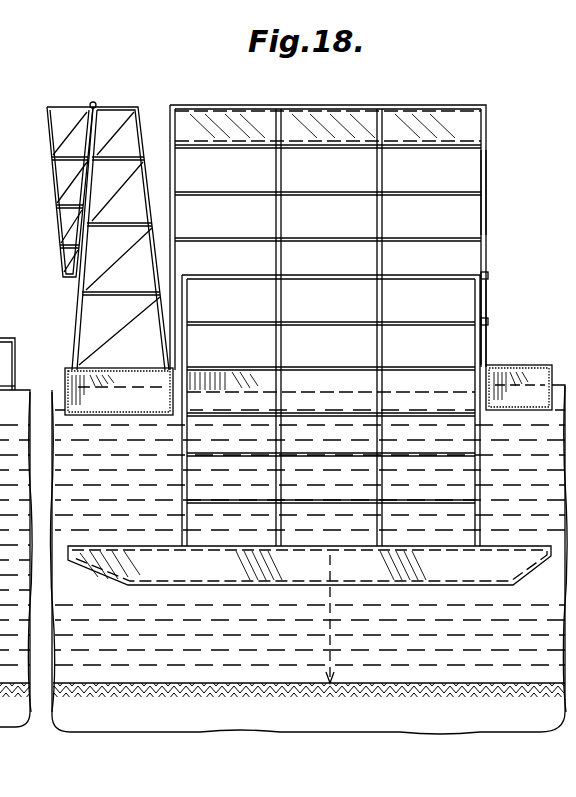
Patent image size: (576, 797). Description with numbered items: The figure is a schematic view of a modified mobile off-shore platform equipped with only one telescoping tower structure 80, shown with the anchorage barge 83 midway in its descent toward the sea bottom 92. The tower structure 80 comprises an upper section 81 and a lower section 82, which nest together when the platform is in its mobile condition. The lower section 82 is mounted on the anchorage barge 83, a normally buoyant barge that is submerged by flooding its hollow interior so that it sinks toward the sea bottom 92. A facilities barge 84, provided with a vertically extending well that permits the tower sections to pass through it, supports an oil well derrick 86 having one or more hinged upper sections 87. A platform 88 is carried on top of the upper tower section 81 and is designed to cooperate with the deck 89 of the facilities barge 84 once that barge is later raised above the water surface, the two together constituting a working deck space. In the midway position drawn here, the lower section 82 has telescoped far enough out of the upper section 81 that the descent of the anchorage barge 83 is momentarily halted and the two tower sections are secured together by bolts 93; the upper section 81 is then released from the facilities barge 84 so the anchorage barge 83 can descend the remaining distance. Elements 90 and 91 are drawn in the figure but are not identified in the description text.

The telescoping tower structure 80 is at (496, 146).
The upper section 81 is at (488, 206).
The lower section 82 is at (482, 478).
The anchorage barge 83 is at (223, 586).
The facilities barge 84 is at (64, 376).
The oil well derrick 86 is at (76, 290).
The hinged upper section 87 is at (48, 142).
The platform 88 is at (351, 104).
The deck 89 is at (13, 352).
The guide post 90 is at (488, 346).
The right housing 91 is at (522, 368).
The sea bottom 92 is at (466, 683).
The bolts 93 is at (489, 320).